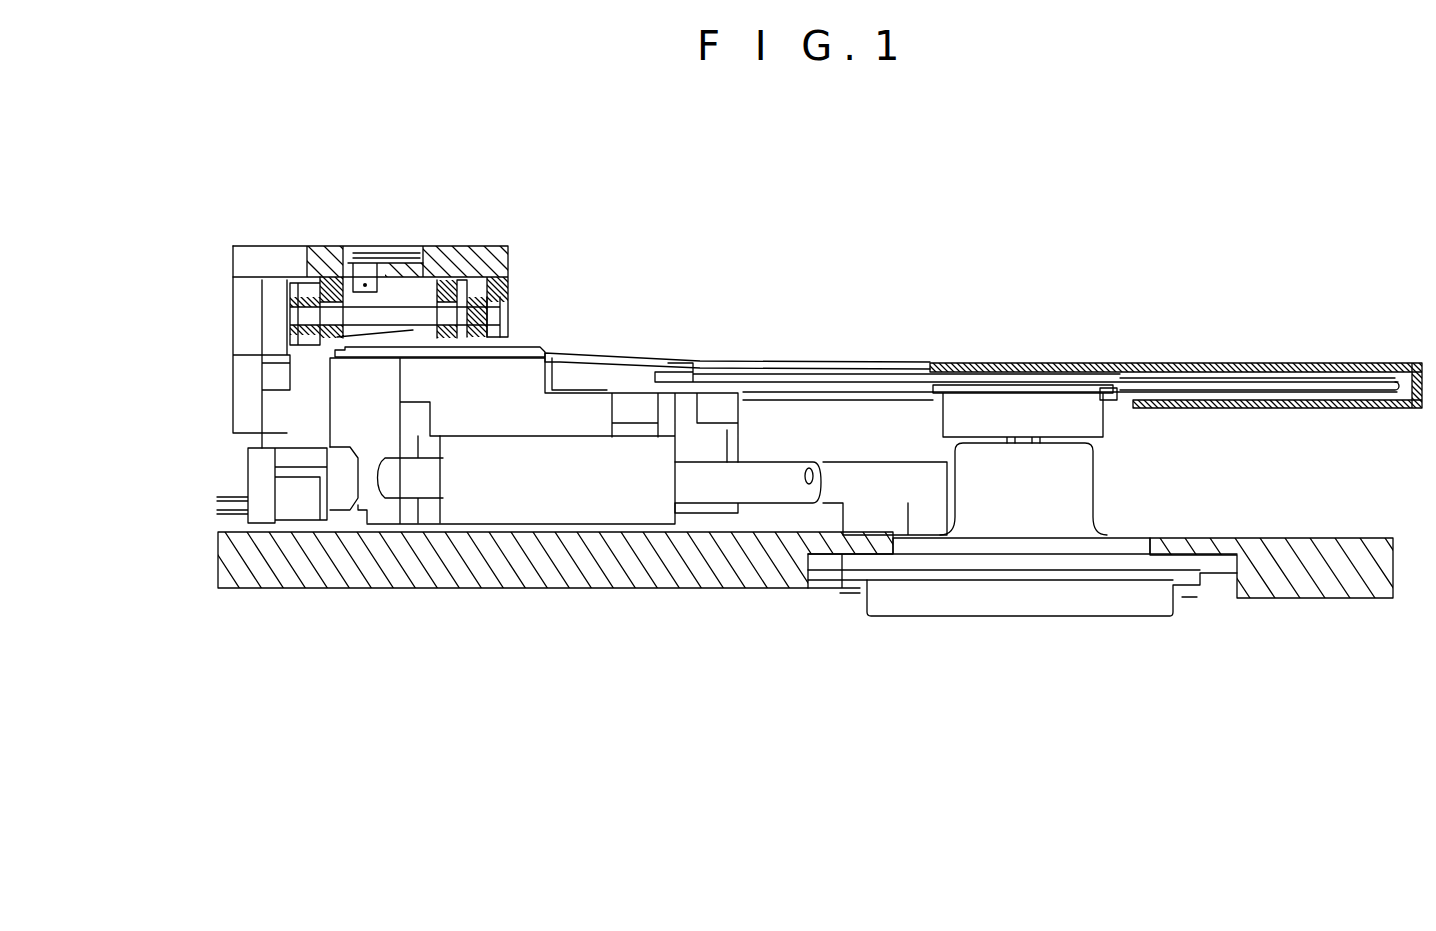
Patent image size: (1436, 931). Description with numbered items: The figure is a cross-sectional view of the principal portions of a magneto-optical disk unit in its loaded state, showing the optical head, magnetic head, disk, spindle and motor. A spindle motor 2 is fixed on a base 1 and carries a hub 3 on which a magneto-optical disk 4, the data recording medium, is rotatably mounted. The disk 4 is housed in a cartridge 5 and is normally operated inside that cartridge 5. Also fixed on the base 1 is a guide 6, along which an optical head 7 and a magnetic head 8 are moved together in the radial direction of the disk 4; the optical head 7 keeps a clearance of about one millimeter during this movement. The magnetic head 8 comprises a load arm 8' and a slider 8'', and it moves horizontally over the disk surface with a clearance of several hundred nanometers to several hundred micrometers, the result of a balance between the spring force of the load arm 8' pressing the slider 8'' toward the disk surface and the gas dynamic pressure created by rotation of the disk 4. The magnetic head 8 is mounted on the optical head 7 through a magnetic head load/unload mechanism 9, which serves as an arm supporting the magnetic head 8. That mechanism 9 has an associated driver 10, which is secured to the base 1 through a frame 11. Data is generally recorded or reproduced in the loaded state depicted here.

The base 1 is at (389, 580).
The spindle motor 2 is at (1137, 603).
The hub 3 is at (1062, 408).
The magneto-optical disk 4 is at (1230, 383).
The cartridge 5 is at (1355, 364).
The guide 6 is at (867, 490).
The optical head 7 is at (563, 503).
The magnetic head 8 is at (971, 252).
The load arm 8' is at (737, 279).
The slider 8'' is at (1026, 286).
The magnetic head load/unload mechanism 9 is at (538, 350).
The driver 10 is at (472, 247).
The frame 11 is at (232, 320).